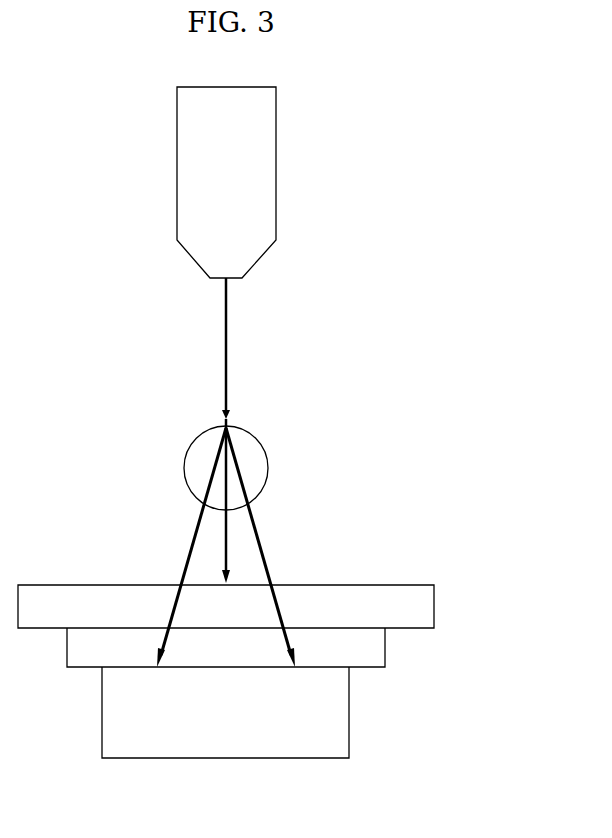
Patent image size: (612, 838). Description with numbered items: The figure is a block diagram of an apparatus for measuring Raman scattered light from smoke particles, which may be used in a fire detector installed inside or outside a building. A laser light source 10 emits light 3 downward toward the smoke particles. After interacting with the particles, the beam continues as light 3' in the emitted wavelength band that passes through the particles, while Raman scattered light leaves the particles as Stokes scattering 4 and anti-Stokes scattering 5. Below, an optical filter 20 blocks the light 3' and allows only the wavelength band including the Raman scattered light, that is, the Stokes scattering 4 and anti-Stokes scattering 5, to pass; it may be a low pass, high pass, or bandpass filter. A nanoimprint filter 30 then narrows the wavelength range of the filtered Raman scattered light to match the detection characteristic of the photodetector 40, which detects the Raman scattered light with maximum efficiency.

The light source 10 is at (255, 157).
The light emitted from the light source 3 is at (260, 430).
The light passing through the smoke particles 3' is at (244, 488).
The Stokes scattering 4 is at (263, 565).
The anti-Stokes scattering 5 is at (183, 562).
The optical filter 20 is at (425, 605).
The nanoimprint filter 30 is at (370, 652).
The photodetector 40 is at (335, 712).